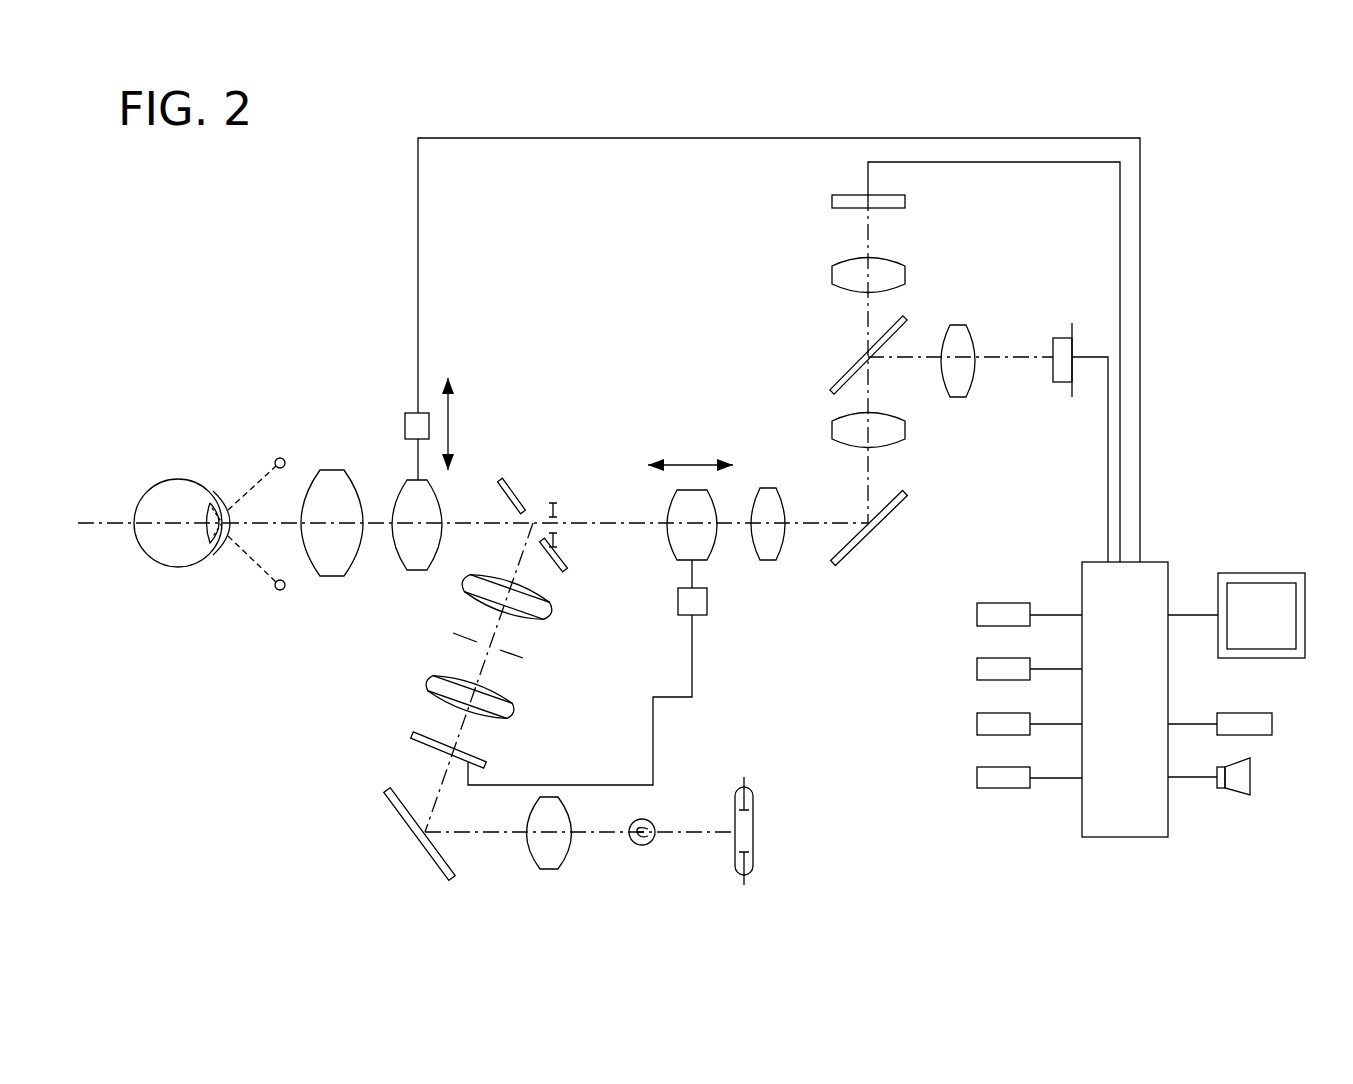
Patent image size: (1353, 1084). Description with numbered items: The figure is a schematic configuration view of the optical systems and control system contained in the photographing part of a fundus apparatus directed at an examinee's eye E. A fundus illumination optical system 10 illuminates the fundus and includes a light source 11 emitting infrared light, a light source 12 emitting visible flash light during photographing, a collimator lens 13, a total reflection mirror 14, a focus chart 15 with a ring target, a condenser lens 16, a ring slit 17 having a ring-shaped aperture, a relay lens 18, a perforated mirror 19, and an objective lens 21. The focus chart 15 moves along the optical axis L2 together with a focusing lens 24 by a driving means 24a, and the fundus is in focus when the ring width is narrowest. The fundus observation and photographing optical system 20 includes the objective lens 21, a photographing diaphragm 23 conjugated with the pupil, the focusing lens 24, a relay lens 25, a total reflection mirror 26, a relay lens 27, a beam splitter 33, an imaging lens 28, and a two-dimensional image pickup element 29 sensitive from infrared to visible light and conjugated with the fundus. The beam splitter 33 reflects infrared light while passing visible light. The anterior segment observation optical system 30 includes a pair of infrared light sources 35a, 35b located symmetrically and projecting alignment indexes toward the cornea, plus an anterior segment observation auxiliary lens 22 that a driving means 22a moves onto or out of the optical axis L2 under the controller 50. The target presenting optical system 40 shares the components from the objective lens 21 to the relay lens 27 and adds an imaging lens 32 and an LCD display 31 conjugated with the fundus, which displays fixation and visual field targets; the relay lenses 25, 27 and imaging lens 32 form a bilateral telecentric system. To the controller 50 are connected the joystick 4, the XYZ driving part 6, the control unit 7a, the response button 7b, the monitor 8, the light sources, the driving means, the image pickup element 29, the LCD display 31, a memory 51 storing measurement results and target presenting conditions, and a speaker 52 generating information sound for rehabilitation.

The joystick 4 is at (977, 615).
The XYZ driving part 6 is at (977, 669).
The control unit 7a is at (977, 724).
The response button 7b is at (977, 778).
The monitor 8 is at (1268, 585).
The fundus illumination optical system 10 is at (345, 811).
The light source 11 is at (645, 845).
The light source 12 is at (750, 838).
The collimator lens 13 is at (555, 835).
The total reflection mirror 14 is at (410, 810).
The focus chart 15 is at (415, 738).
The condenser lens 16 is at (440, 685).
The ring slit 17 is at (505, 652).
The relay lens 18 is at (520, 602).
The perforated mirror 19 is at (512, 490).
The fundus observation and photographing optical system 20 is at (628, 390).
The objective lens 21 is at (325, 568).
The anterior segment observation auxiliary lens 22 is at (400, 488).
The driving means 22a is at (410, 418).
The photographing diaphragm 23 is at (556, 498).
The focusing lens 24 is at (700, 540).
The driving means 24a is at (697, 605).
The relay lens 25 is at (773, 540).
The total reflection mirror 26 is at (866, 550).
The relay lens 27 is at (840, 425).
The imaging lens 28 is at (950, 340).
The two-dimensional image pickup element 29 is at (1058, 355).
The anterior segment observation optical system 30 is at (230, 445).
The LCD display 31 is at (840, 203).
The imaging lens 32 is at (850, 272).
The beam splitter 33 is at (840, 380).
The infrared light source 35a is at (280, 592).
The infrared light source 35b is at (280, 458).
The target presenting optical system 40 is at (720, 293).
The controller 50 is at (1140, 585).
The memory 51 is at (1272, 726).
The speaker 52 is at (1250, 778).
The examinee's eye E is at (170, 558).
The optical axis L2 is at (612, 535).